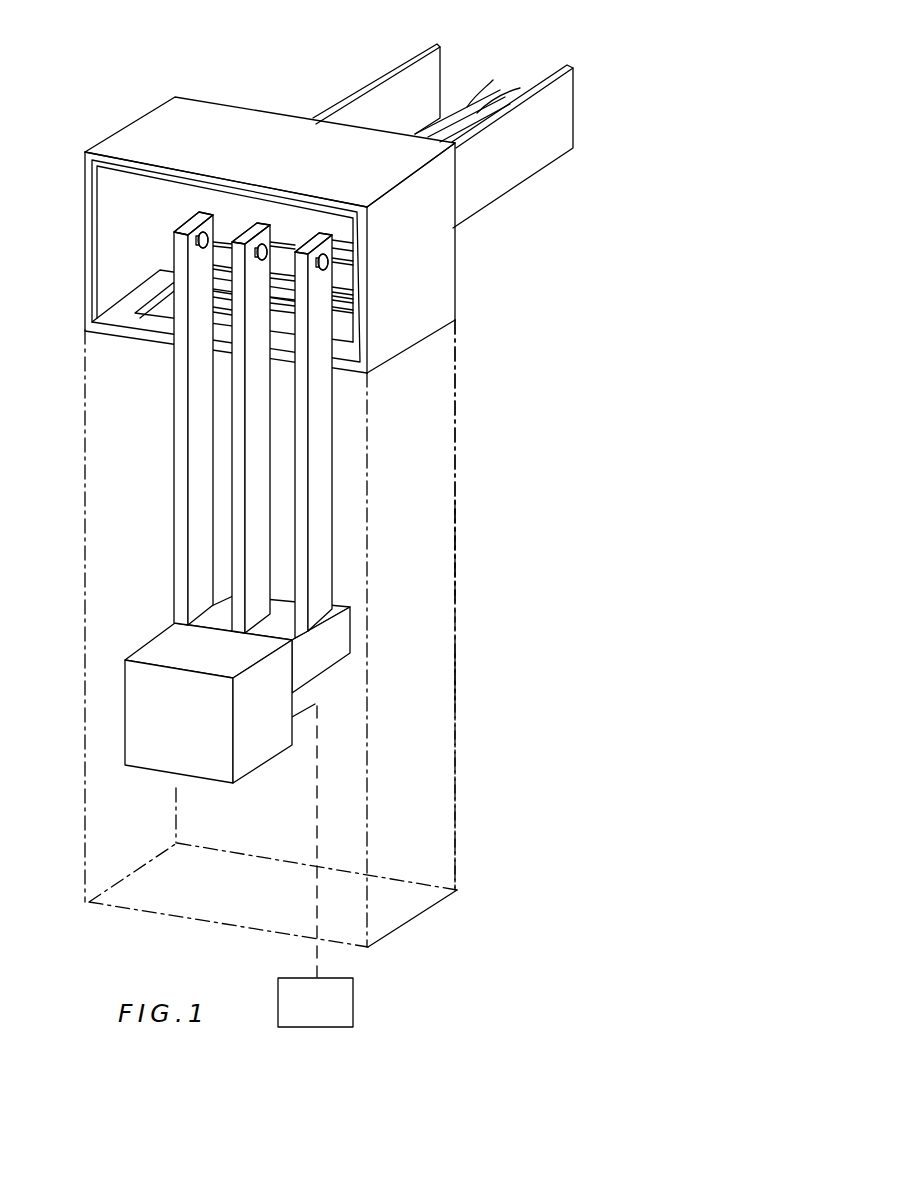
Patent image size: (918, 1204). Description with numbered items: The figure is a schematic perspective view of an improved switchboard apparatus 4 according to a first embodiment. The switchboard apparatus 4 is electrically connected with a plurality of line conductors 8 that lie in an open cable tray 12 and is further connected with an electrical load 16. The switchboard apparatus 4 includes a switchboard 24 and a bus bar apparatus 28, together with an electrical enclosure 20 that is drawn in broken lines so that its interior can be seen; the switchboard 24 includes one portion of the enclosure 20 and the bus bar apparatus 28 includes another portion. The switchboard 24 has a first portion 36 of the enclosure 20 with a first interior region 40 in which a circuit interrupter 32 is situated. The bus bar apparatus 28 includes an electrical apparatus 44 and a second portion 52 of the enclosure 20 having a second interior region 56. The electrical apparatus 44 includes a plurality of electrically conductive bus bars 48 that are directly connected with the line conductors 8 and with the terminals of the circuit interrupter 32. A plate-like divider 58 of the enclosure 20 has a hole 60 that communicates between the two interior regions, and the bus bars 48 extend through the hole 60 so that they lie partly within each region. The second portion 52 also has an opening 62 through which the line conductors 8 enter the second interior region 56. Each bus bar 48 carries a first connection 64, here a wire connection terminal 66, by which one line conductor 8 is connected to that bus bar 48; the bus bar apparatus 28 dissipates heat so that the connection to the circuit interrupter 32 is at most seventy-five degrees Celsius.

The switchboard apparatus 4 is at (482, 398).
The line conductors 8 is at (210, 222).
The cable tray 12 is at (574, 108).
The electrical load 16 is at (355, 995).
The electrical enclosure 20 is at (462, 506).
The switchboard 24 is at (462, 582).
The bus bar apparatus 28 is at (80, 238).
The circuit interrupter 32 is at (160, 775).
The first portion 36 is at (456, 695).
The first interior region 40 is at (340, 757).
The electrical apparatus 44 is at (170, 531).
The bus bars 48 is at (303, 567).
The second portion 52 is at (456, 265).
The second interior region 56 is at (115, 182).
The divider 58 is at (150, 343).
The hole 60 is at (204, 313).
The opening 62 is at (347, 250).
The first connection 64 is at (258, 260).
The wire connection terminal 66 is at (201, 234).